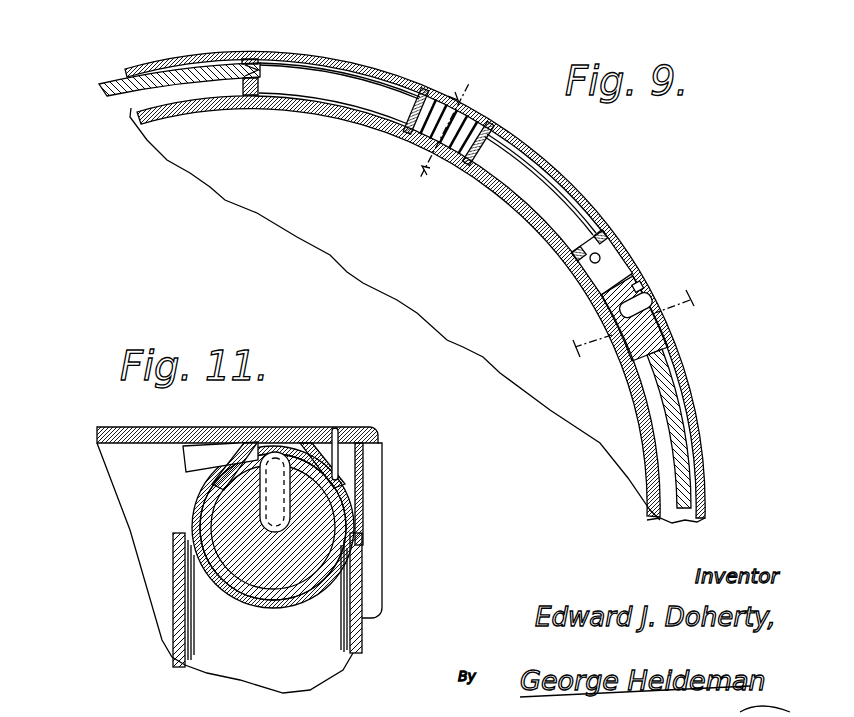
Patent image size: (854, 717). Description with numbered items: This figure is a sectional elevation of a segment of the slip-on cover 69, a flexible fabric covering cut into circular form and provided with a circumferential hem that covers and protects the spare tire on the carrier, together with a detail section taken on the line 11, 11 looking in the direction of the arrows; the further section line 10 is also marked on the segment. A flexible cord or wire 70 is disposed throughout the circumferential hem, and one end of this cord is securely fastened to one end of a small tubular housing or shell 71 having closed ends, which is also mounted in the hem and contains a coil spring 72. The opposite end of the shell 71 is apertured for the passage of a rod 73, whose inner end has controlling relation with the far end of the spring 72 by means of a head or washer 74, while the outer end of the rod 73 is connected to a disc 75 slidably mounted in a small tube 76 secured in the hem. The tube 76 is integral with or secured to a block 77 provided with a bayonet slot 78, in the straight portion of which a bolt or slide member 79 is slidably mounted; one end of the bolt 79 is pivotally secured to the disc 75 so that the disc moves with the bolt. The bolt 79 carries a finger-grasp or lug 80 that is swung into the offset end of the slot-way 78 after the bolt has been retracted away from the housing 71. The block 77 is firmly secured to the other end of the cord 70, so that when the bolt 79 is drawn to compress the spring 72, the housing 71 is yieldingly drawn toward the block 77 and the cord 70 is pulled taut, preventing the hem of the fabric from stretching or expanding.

In FIG. 9, the section line 10- 10 is at (449, 128).
In FIG. 9, the section line 11 11 is at (640, 327).
In FIG. 9, the slip-on cover 69 is at (210, 188).
In FIG. 11, the slip-on cover 69 is at (97, 430).
In FIG. 9, the flexible cord or wire 70 is at (100, 93).
In FIG. 9, the tubular housing or shell 71 is at (331, 63).
In FIG. 9, the coil spring 72 is at (478, 125).
In FIG. 9, the rod 73 is at (490, 155).
In FIG. 9, the head or washer 74 is at (425, 117).
In FIG. 9, the disc 75 is at (607, 252).
In FIG. 9, the small tube 76 is at (594, 228).
In FIG. 9, the block 77 is at (682, 332).
In FIG. 11, the block 77 is at (362, 495).
In FIG. 9, the bayonet slot 78 is at (616, 350).
In FIG. 11, the bayonet slot 78 is at (217, 587).
In FIG. 9, the bolt or slide member 79 is at (633, 278).
In FIG. 11, the bolt or slide member 79 is at (278, 493).
In FIG. 9, the finger-grasp or lug 80 is at (640, 285).
In FIG. 11, the finger-grasp or lug 80 is at (206, 427).